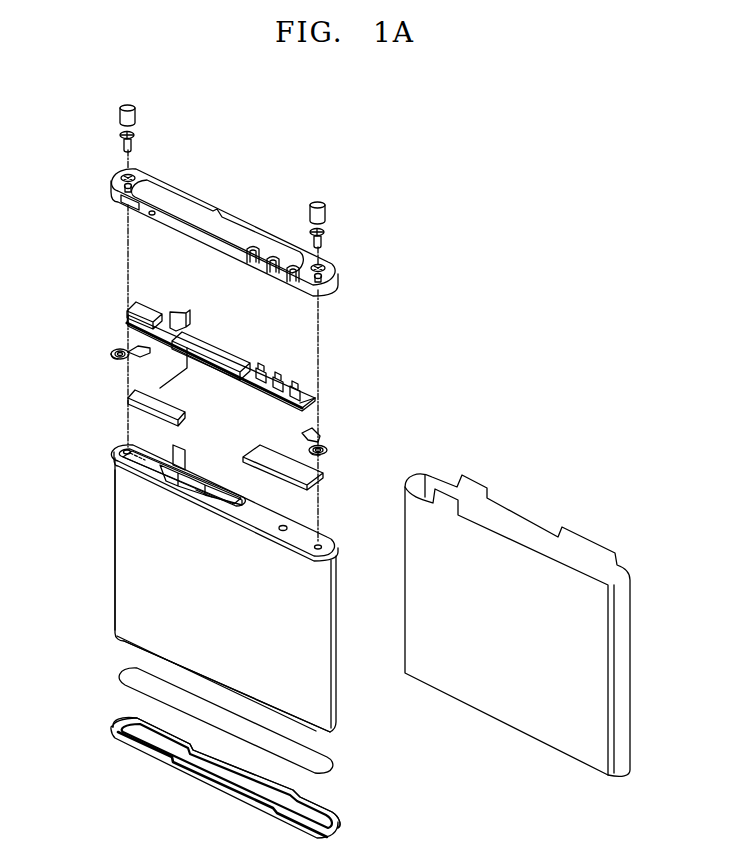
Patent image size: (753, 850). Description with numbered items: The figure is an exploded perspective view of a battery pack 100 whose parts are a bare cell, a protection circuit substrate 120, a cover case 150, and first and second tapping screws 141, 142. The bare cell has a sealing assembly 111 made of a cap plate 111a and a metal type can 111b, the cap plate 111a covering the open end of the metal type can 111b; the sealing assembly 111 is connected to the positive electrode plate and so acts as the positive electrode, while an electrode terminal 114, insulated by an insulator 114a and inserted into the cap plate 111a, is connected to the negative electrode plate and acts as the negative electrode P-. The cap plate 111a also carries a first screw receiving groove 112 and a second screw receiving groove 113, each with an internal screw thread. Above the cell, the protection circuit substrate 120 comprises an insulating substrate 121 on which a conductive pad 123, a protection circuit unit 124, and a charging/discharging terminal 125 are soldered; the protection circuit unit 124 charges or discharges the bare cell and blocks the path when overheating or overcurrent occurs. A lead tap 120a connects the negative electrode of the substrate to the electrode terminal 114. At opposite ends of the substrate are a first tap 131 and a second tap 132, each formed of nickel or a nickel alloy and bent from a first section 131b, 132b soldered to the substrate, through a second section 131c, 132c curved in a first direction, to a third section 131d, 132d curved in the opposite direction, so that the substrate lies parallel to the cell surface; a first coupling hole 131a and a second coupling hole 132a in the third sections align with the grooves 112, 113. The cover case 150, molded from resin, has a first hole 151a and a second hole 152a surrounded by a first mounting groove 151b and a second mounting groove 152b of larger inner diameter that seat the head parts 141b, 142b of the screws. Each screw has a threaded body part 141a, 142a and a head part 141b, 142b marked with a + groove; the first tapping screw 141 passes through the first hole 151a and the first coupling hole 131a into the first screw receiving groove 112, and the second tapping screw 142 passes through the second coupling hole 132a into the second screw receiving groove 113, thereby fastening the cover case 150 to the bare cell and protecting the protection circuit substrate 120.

The battery pack 100 is at (500, 98).
The sealing assembly 111 is at (47, 547).
The cap plate 111a is at (263, 522).
The metal type can 111b is at (123, 552).
The first screw receiving groove 112 is at (333, 548).
The second screw receiving groove 113 is at (116, 455).
The electrode terminal 114 is at (218, 508).
The insulator 114a is at (247, 495).
The protection circuit substrate 120 is at (208, 325).
The lead tap 120a is at (195, 470).
The insulating substrate 121 is at (318, 397).
The conductive pad 123 is at (184, 312).
The protection circuit unit 124 is at (150, 308).
The charging/discharging terminal 125 is at (293, 390).
The first tap 131 is at (300, 437).
The first coupling hole 131a is at (326, 448).
The first section of first tap 131b is at (314, 432).
The second section of first tap 131c is at (316, 443).
The third section of first tap 131d is at (327, 454).
The second tap 132 is at (116, 362).
The second coupling hole 132a is at (116, 352).
The first section of second tap 132b is at (138, 349).
The second section of second tap 132c is at (125, 352).
The third section of second tap 132d is at (113, 358).
The first tapping screw 141 is at (327, 224).
The body part of first tapping screw 141a is at (323, 241).
The head part of first tapping screw 141b is at (325, 230).
The second tapping screw 142 is at (120, 134).
The body part of second tapping screw 142a is at (123, 146).
The head part of second tapping screw 142b is at (120, 135).
The cover case 150 is at (191, 189).
The first hole 151a is at (337, 287).
The first mounting groove 151b is at (325, 270).
The second hole 152a is at (124, 188).
The second mounting groove 152b is at (121, 177).
The negative electrode P- is at (207, 497).